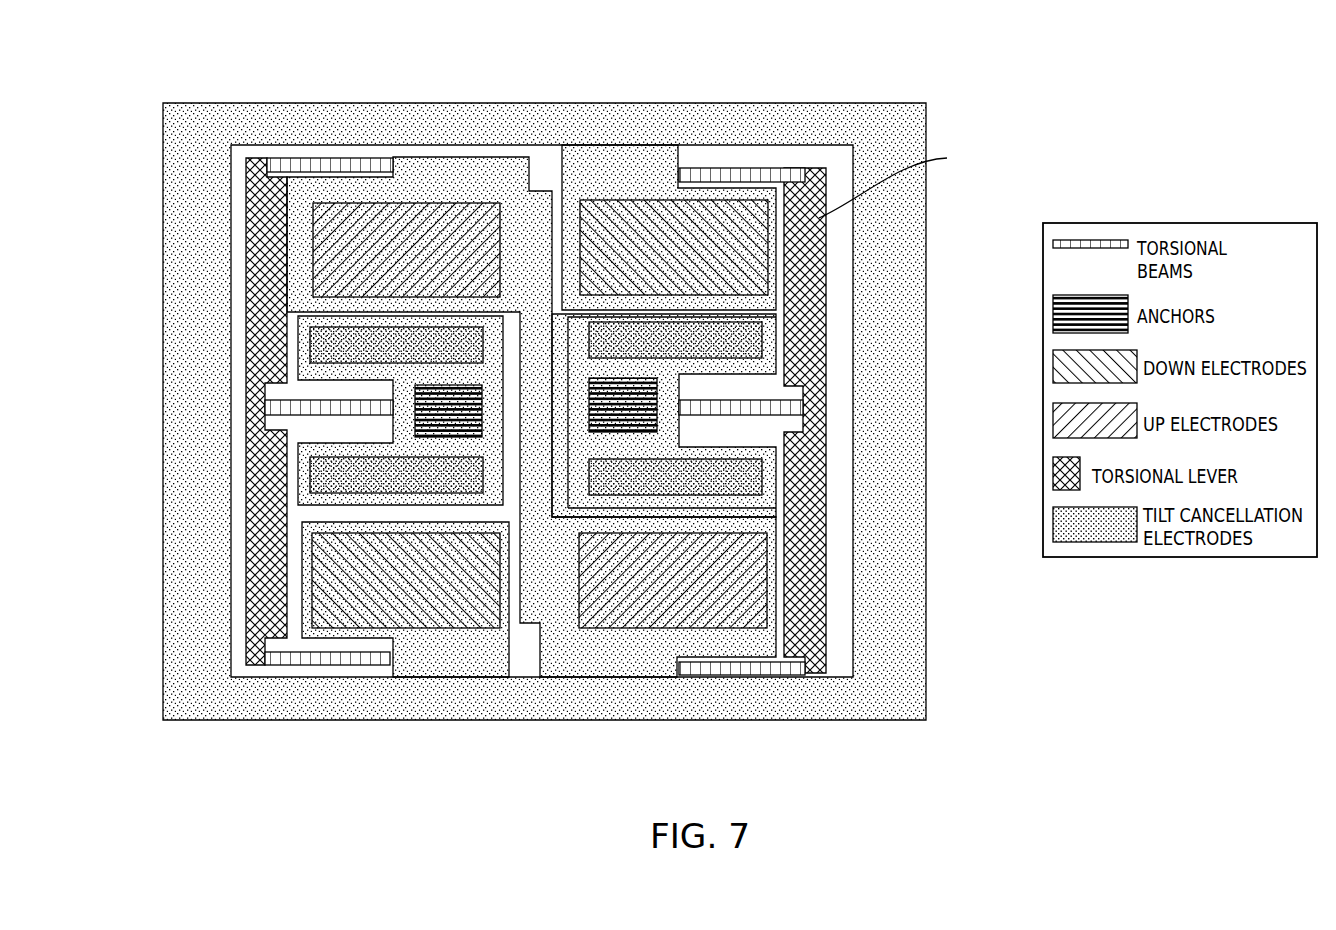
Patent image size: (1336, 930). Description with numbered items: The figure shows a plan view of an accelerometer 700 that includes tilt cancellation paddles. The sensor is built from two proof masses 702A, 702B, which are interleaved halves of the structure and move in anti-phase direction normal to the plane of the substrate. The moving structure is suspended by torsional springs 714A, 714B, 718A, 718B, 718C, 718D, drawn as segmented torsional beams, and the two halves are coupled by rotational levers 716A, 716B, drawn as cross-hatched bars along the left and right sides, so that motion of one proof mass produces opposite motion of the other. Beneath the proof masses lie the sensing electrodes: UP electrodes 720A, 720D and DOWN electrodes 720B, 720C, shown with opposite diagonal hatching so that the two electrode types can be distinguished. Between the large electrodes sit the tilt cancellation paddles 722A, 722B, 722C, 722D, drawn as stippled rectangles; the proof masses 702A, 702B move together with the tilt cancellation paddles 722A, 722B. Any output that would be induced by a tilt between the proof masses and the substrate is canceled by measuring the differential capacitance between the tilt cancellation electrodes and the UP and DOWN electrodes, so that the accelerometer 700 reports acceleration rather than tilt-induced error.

The accelerometer 700 is at (926, 90).
The proof mass 702A is at (168, 366).
The proof mass 702B is at (500, 172).
The torsional spring 714A is at (267, 406).
The torsional spring 714B is at (804, 408).
The rotational lever 716A is at (260, 580).
The rotational lever 716B is at (821, 623).
The torsional spring 718A is at (337, 165).
The torsional spring 718B is at (768, 168).
The torsional spring 718C is at (293, 662).
The torsional spring 718D is at (762, 668).
The UP electrode C21 720A is at (330, 247).
The DOWN electrode C11 720B is at (755, 275).
The DOWN electrode C11 720C is at (353, 620).
The UP electrode C21 720D is at (675, 620).
The tilt cancellation paddle 722A is at (313, 352).
The tilt cancellation paddle 722B is at (757, 350).
The tilt cancellation paddle 722C is at (319, 482).
The tilt cancellation paddle 722D is at (757, 483).